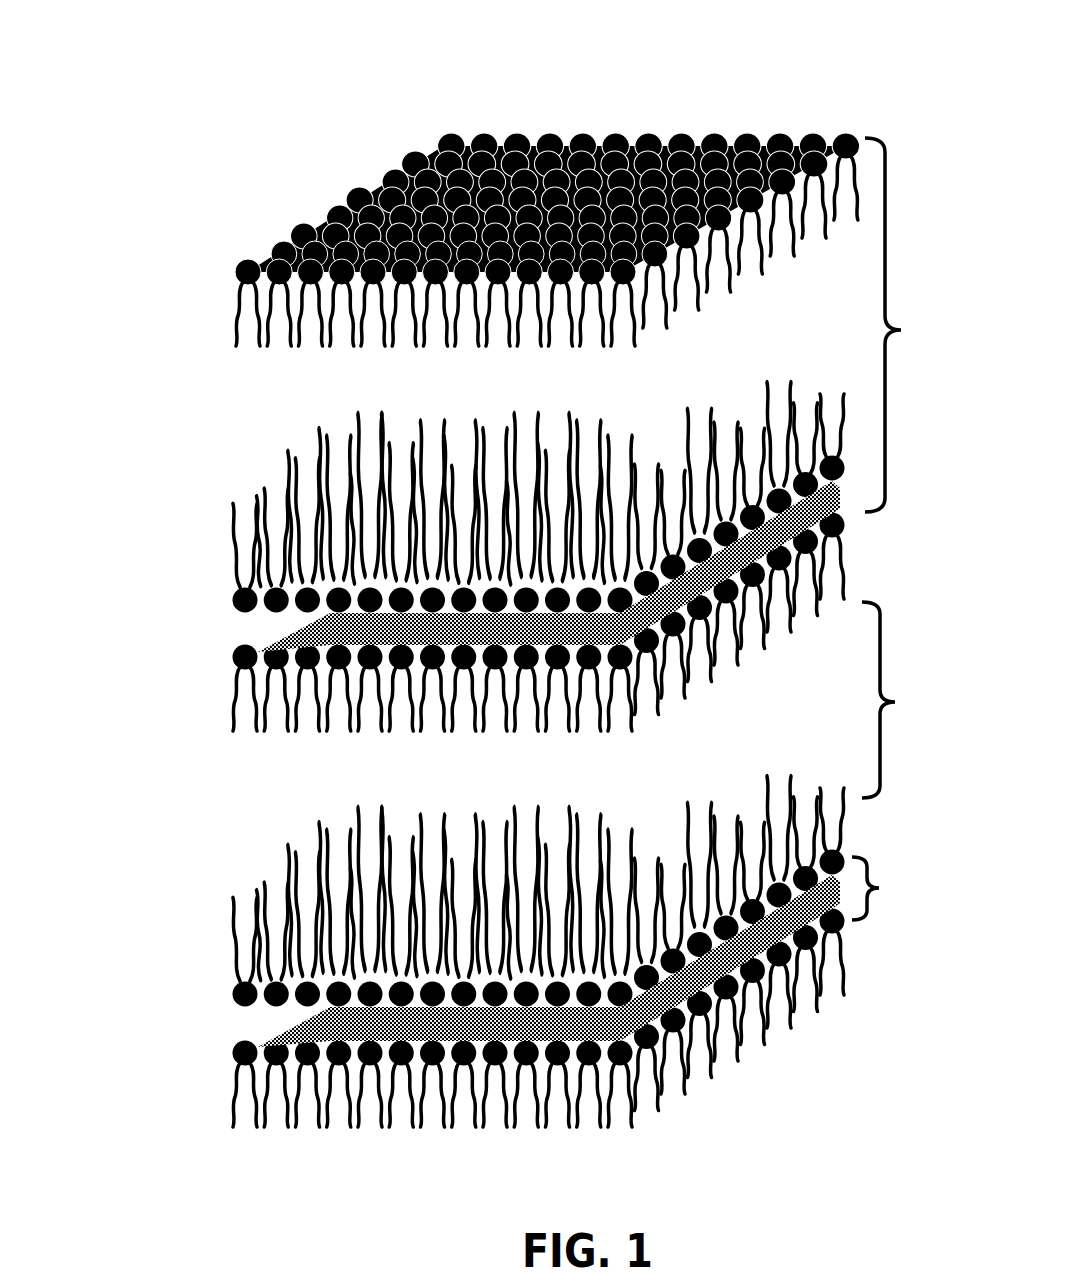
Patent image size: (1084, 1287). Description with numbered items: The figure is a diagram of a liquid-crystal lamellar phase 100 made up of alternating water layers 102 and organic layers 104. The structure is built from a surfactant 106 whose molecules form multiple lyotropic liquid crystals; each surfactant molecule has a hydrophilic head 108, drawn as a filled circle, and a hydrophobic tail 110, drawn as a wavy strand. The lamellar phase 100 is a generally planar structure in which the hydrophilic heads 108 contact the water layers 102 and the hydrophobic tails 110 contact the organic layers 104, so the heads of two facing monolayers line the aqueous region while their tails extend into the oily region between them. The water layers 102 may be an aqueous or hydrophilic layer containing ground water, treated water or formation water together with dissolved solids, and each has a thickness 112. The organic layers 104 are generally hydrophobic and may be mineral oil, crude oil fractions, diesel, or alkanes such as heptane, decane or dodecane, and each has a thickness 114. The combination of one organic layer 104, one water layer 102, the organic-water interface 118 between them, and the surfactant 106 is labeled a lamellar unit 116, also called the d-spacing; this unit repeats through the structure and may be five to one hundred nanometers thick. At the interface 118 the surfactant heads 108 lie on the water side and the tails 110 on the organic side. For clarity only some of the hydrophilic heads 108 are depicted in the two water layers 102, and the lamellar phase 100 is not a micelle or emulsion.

The liquid-crystal lamellar phase 100 is at (716, 88).
The water layers 102 is at (255, 625).
The organic layers 104 is at (298, 403).
The surfactant 106 is at (224, 298).
The hydrophilic head 108 is at (388, 166).
The hydrophobic tail 110 is at (240, 333).
The thickness of water layer 112 is at (893, 888).
The thickness of organic layer 114 is at (906, 700).
The lamellar unit 116 is at (500, 622).
The organic-water interface 118 is at (838, 535).